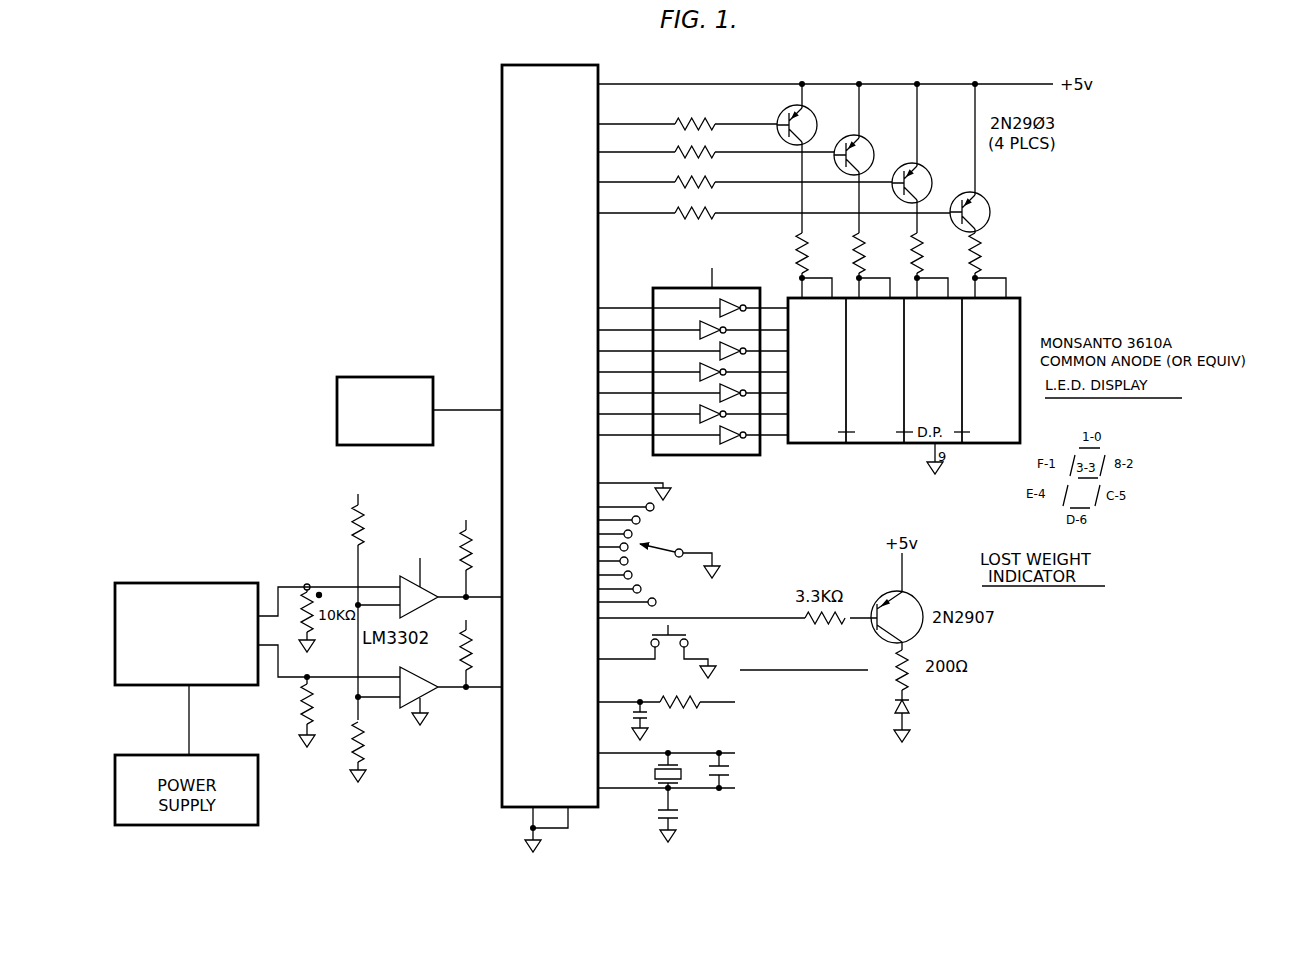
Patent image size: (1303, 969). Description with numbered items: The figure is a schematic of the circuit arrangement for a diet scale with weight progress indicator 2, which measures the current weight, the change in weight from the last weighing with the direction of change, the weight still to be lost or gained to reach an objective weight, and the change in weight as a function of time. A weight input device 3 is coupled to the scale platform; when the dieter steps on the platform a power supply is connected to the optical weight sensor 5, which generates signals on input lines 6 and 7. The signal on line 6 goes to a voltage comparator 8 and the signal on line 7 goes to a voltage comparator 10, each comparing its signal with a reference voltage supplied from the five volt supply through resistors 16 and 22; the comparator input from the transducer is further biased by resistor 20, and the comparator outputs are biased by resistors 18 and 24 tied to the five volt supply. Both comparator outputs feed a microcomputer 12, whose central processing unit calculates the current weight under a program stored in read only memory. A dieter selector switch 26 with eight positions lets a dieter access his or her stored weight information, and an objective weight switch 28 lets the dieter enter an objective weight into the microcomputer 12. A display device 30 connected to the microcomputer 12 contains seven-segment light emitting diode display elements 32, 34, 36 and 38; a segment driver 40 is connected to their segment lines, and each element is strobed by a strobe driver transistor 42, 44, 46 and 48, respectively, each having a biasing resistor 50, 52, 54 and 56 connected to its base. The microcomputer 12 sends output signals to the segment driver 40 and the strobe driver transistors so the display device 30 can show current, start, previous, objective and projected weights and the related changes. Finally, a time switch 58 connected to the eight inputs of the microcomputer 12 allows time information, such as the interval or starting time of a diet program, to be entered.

The diet scale with weight progress indicator 2 is at (378, 338).
The weight input device 3 is at (384, 800).
The optical weight sensor 5 is at (222, 583).
The input line 6 is at (283, 587).
The input line 7 is at (278, 677).
The voltage comparator 8 is at (415, 568).
The voltage comparator 10 is at (406, 724).
The microcomputer 12 is at (503, 777).
The resistor 16 is at (355, 524).
The resistor 18 is at (462, 547).
The resistor 20 is at (314, 710).
The resistor 22 is at (355, 764).
The resistor 24 is at (446, 644).
The dieter selector switch 26 is at (726, 561).
The objective weight switch 28 is at (730, 655).
The display device 30 is at (1055, 226).
The light emitting diode display element 32 is at (808, 443).
The light emitting diode display element 34 is at (859, 443).
The light emitting diode display element 36 is at (951, 443).
The light emitting diode display element 38 is at (999, 443).
The segment driver 40 is at (742, 288).
The strobe driver transistor 42 is at (811, 113).
The strobe driver transistor 44 is at (869, 143).
The strobe driver transistor 46 is at (927, 171).
The strobe driver transistor 48 is at (986, 200).
The biasing resistor 50 is at (675, 120).
The biasing resistor 52 is at (675, 149).
The biasing resistor 54 is at (675, 178).
The biasing resistor 56 is at (675, 208).
The time switch 58 is at (337, 437).